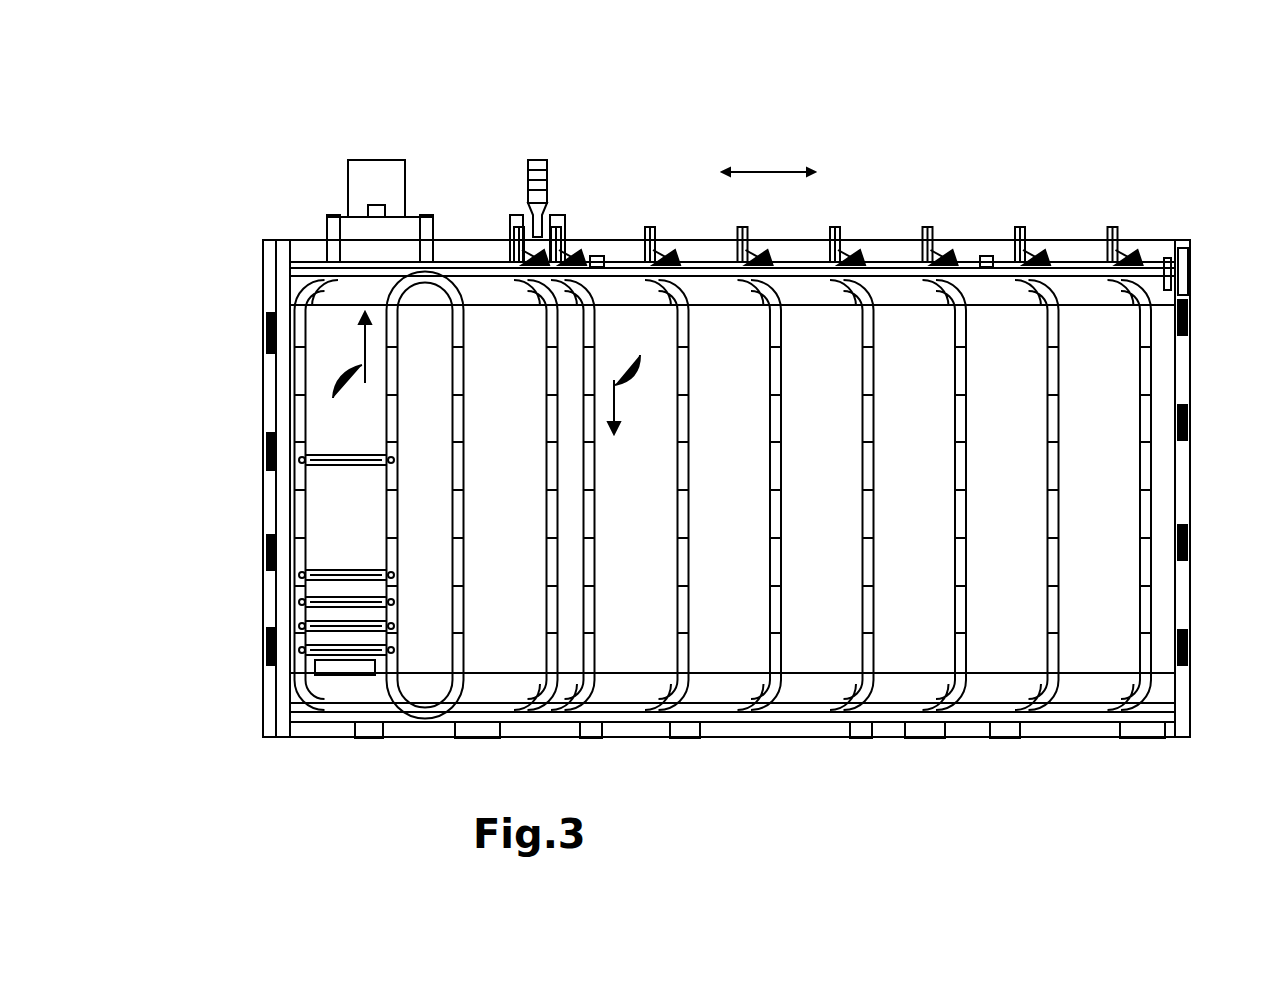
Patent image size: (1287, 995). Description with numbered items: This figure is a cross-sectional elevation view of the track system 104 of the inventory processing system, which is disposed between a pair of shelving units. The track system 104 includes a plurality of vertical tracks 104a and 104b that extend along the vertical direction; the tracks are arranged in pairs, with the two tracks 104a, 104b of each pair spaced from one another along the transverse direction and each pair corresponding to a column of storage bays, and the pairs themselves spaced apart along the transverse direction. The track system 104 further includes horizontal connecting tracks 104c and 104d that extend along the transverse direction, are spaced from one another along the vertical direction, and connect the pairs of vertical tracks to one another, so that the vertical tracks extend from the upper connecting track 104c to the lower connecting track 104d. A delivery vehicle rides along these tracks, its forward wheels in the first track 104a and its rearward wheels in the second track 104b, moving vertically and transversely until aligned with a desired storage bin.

The track system 104 is at (886, 128).
The vertical track 104a is at (290, 328).
The vertical track 104b is at (1150, 325).
The horizontal connecting track 104c is at (612, 265).
The horizontal connecting track 104d is at (1008, 738).